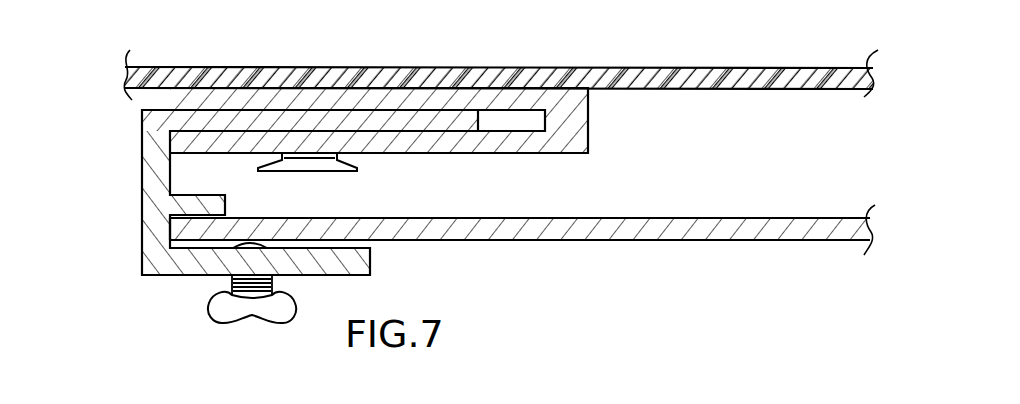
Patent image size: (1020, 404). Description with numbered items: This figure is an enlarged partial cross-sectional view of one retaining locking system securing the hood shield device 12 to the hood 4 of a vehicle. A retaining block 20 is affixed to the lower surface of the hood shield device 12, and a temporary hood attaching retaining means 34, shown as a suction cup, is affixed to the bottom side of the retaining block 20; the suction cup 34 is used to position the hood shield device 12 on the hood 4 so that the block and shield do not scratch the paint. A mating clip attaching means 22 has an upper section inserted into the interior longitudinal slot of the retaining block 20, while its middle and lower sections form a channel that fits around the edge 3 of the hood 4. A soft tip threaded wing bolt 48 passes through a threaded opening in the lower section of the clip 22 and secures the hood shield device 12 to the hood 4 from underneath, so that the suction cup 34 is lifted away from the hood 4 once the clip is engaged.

The hood shield device 12 is at (744, 68).
The retaining block 20 is at (588, 122).
The mating clip attaching means 22 is at (140, 165).
The edge 3 is at (168, 232).
The hood 4 is at (694, 240).
The temporary hood attaching retaining means 34 is at (352, 170).
The soft tip threaded wing bolt 48 is at (208, 313).